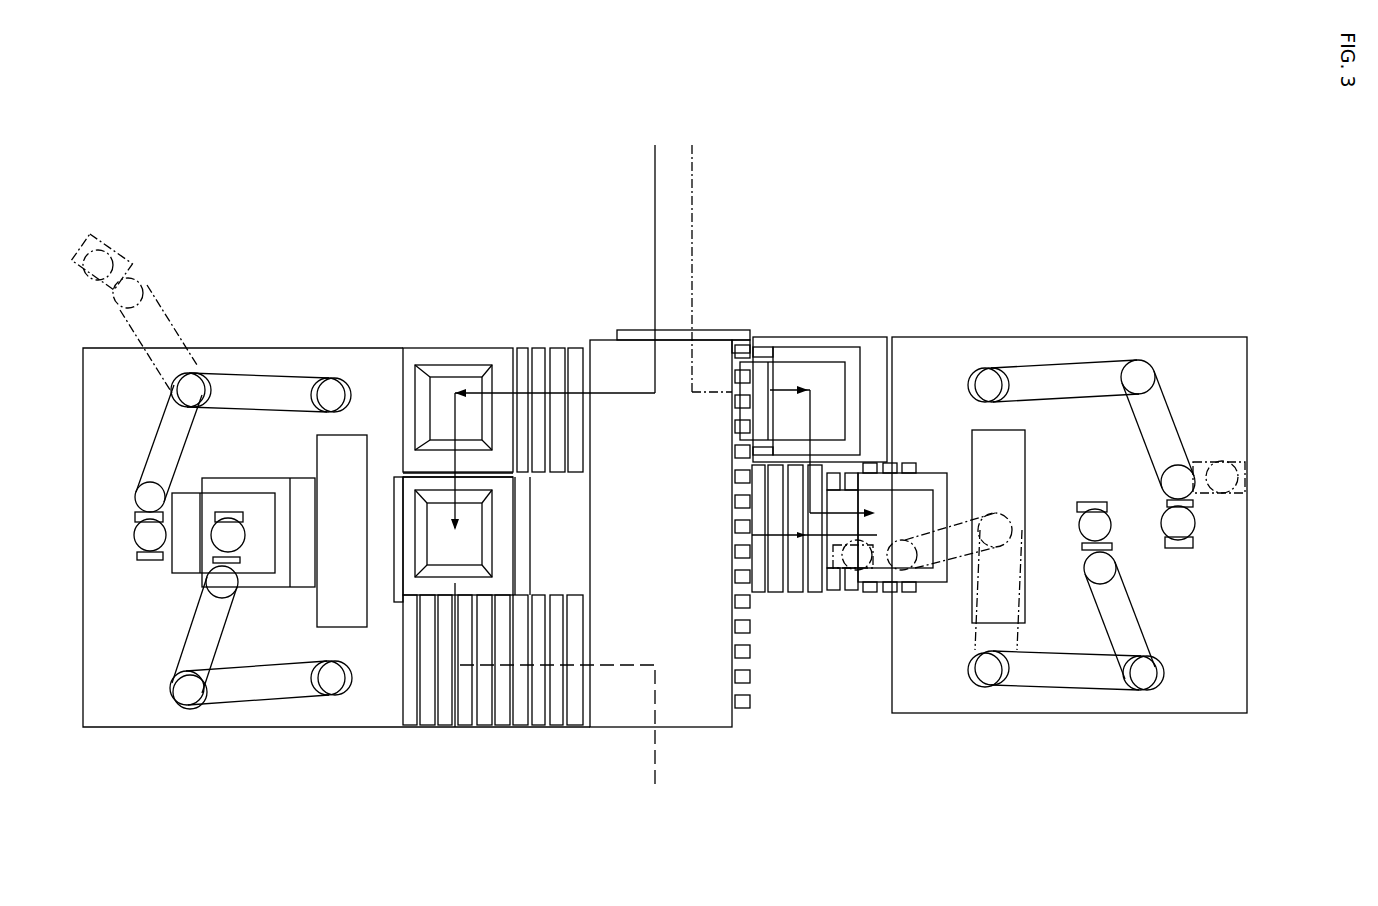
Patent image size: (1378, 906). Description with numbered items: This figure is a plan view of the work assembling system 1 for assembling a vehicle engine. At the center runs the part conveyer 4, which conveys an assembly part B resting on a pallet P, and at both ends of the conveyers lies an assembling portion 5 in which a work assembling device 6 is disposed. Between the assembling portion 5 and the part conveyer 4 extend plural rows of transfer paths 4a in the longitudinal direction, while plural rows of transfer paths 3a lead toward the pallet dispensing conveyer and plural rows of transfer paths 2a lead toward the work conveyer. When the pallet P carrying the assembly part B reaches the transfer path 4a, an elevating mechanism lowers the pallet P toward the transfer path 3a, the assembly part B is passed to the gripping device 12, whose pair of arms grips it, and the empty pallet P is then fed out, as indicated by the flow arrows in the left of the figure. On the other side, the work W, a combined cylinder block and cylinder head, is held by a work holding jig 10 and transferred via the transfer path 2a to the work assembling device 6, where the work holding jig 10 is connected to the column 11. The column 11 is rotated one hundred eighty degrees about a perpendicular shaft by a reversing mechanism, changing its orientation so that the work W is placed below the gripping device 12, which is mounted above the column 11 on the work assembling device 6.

The work assembling system 1 is at (1002, 262).
The transfer paths 2a is at (798, 594).
The transfer paths 3a is at (463, 727).
The part conveyer 4 is at (603, 326).
The transfer paths 4a is at (538, 350).
The assembling portion 5 is at (218, 325).
The work assembling device 6 is at (251, 364).
The work holding jig 10 is at (292, 478).
The column 11 is at (361, 438).
The gripping device for assembly part 12 is at (287, 362).
The work W is at (230, 478).
The assembly part B is at (432, 385).
The pallet P is at (500, 355).